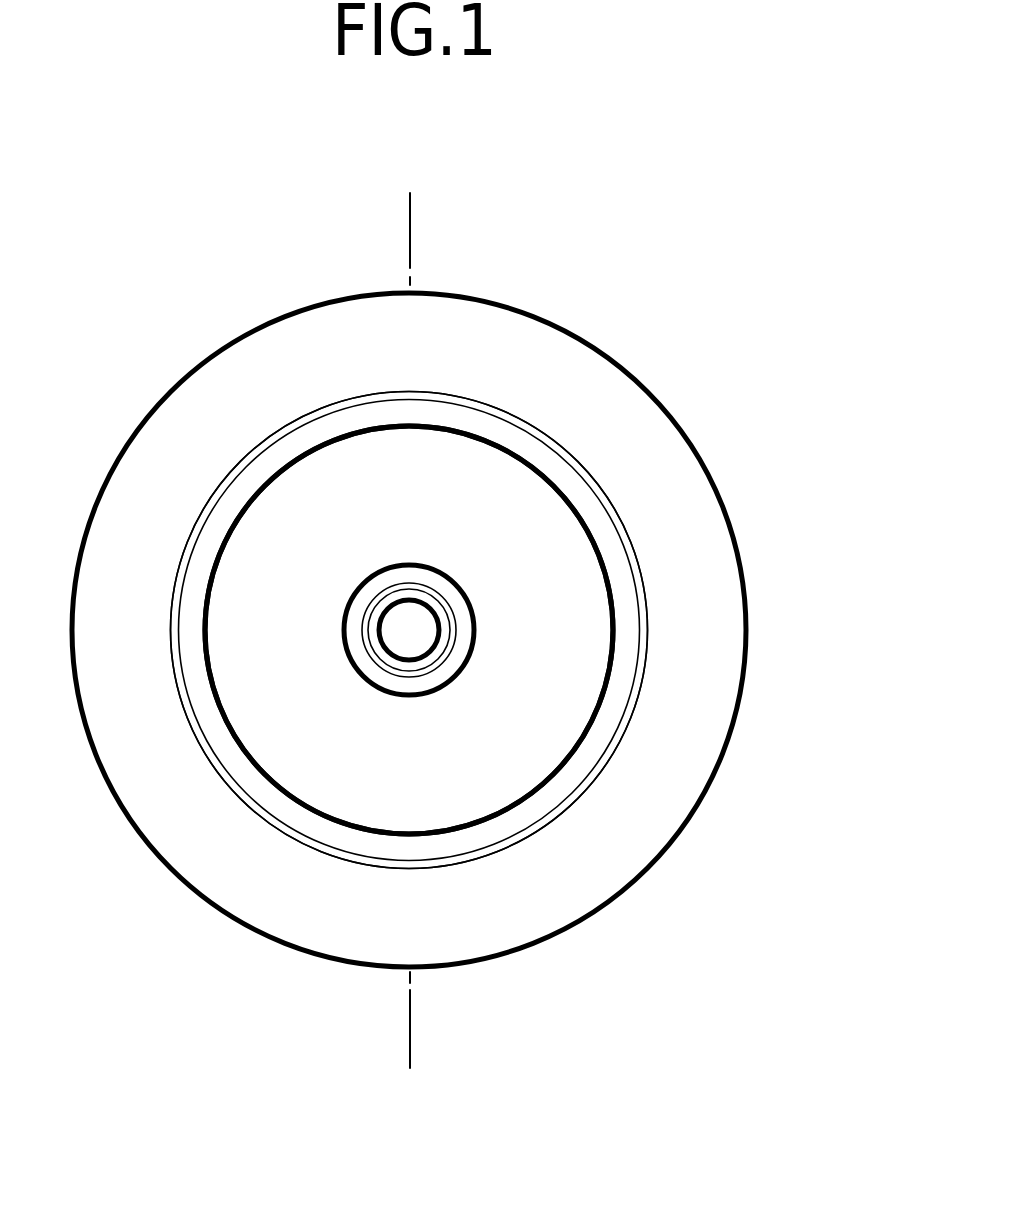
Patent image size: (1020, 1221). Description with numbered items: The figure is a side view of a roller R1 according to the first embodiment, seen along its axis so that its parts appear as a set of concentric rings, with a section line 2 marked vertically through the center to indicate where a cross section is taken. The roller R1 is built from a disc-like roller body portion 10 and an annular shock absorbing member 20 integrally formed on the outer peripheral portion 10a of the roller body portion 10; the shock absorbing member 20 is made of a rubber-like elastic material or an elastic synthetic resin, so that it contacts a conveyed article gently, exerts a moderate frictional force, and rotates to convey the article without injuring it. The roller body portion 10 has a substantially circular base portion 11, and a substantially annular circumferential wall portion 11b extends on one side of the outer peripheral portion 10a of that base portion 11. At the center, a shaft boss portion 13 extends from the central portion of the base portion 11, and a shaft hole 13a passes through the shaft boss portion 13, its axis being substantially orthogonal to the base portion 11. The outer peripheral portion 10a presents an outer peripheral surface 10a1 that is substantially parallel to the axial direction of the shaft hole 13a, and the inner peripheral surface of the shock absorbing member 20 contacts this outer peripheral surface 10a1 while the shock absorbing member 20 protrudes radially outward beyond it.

The section line 2- 2 is at (411, 222).
The roller body portion 10 is at (552, 498).
The outer peripheral portion 10a is at (630, 528).
The outer peripheral surface 10a1 is at (652, 610).
The base portion 11 is at (560, 725).
The circumferential wall portion 11b is at (565, 787).
The shaft boss portion 13 is at (428, 575).
The shaft hole 13a is at (412, 630).
The shock absorbing member 20 is at (718, 677).
The roller R1 is at (253, 942).